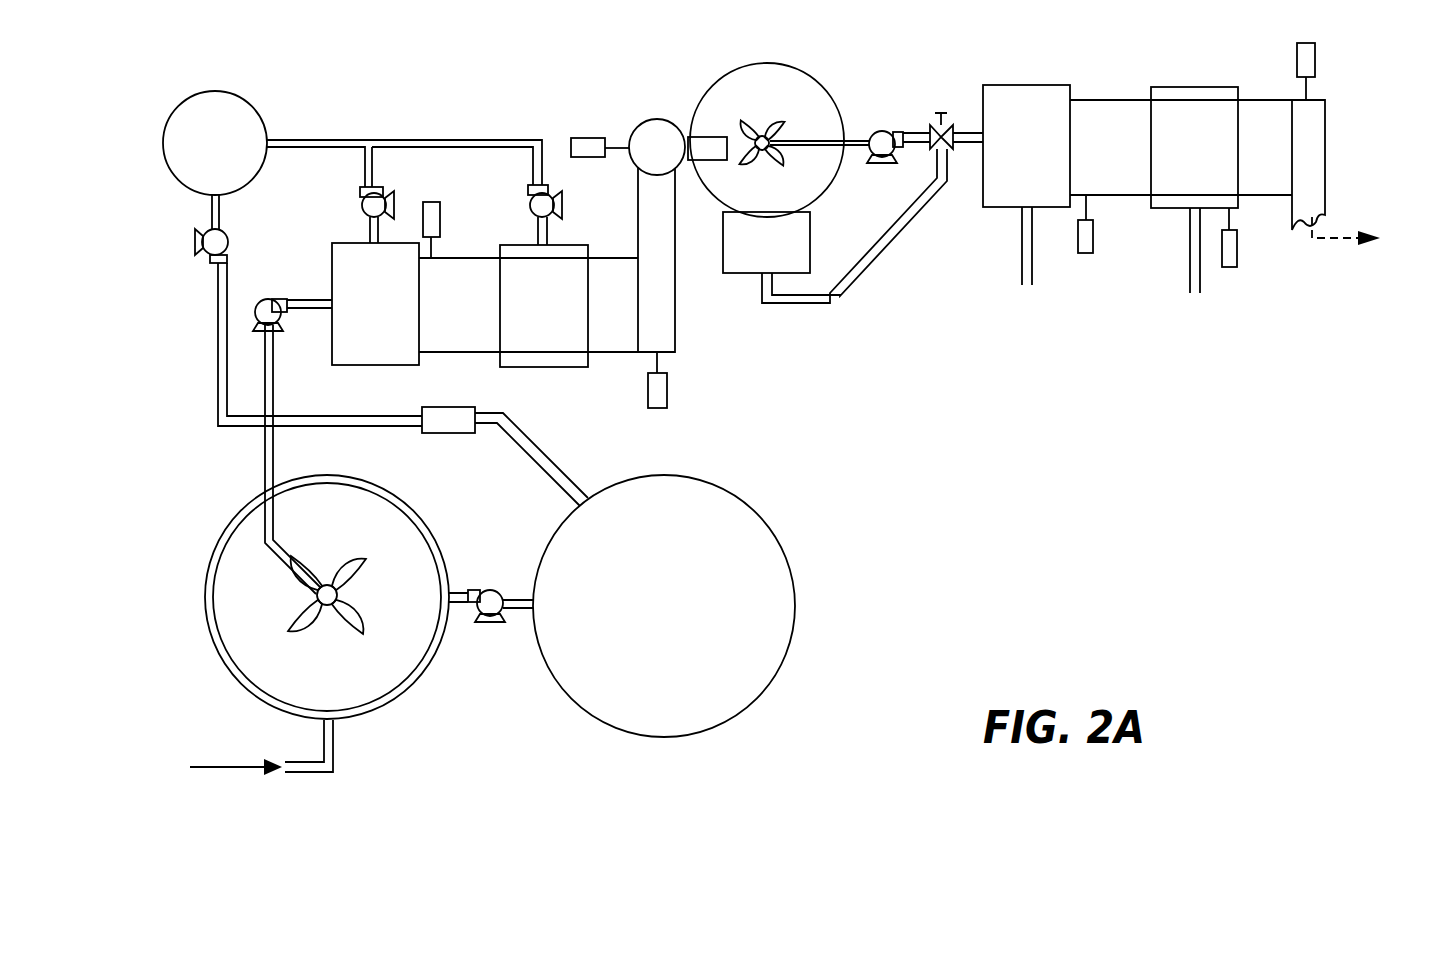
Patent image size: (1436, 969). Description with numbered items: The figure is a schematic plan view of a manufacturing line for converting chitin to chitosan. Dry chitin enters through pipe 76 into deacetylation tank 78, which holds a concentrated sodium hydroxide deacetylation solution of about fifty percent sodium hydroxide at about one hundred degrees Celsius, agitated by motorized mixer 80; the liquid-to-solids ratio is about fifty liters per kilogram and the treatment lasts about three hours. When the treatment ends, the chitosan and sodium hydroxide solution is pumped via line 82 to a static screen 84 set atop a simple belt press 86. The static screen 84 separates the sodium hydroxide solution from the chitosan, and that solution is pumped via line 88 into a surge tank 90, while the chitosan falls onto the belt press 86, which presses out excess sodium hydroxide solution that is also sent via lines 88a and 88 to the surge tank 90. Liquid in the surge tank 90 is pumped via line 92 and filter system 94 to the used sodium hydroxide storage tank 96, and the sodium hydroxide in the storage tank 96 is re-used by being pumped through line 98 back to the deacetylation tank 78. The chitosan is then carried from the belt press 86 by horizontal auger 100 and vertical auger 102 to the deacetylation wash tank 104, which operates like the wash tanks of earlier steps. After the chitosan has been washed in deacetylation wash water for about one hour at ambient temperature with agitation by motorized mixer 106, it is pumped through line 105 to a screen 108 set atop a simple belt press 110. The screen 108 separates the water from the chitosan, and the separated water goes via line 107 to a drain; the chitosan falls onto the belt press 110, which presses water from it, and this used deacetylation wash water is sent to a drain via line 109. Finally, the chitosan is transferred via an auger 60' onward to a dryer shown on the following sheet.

The pipe 76 is at (332, 743).
The deacetylation tank 78 is at (225, 665).
The motorized mixer 80 is at (353, 567).
The line 82 is at (265, 447).
The static screen 84 is at (383, 365).
The belt press 86 is at (602, 345).
The line 88 is at (312, 138).
The line 88a is at (460, 137).
The surge tank 90 is at (262, 120).
The line 92 is at (222, 392).
The filter system 94 is at (467, 408).
The used sodium hydroxide storage tank 96 is at (787, 652).
The line 98 is at (518, 610).
The horizontal auger 100 is at (640, 230).
The vertical auger 102 is at (595, 137).
The deacetylation wash tank 104 is at (840, 108).
The line 105 is at (970, 142).
The motorized mixer 106 is at (797, 105).
The line 107 is at (1022, 262).
The screen 108 is at (810, 228).
The line 109 is at (1190, 260).
The belt press 110 is at (1215, 62).
The auger 60' is at (1317, 169).